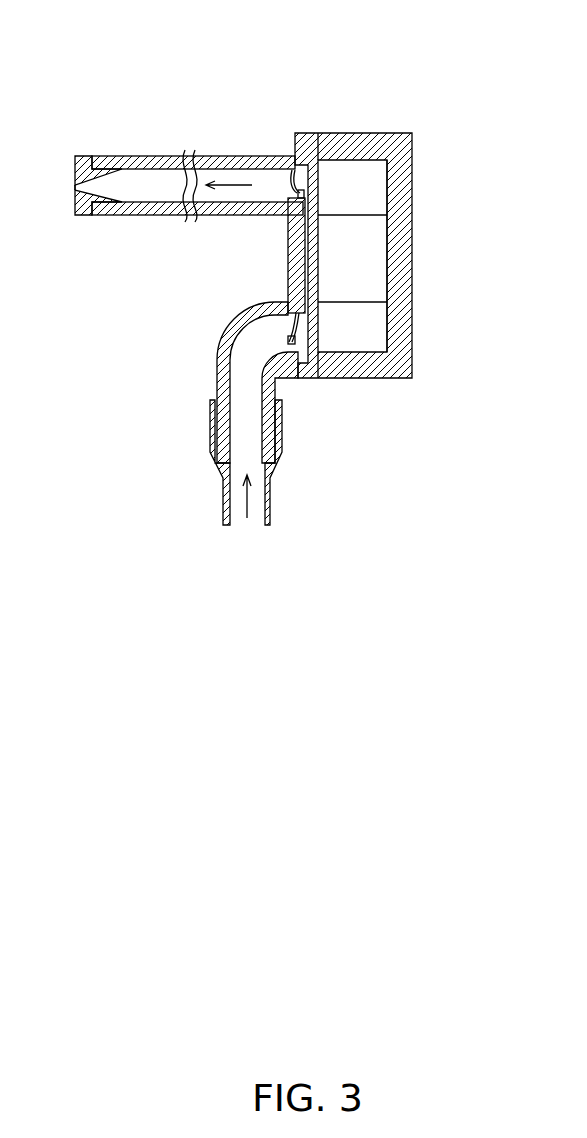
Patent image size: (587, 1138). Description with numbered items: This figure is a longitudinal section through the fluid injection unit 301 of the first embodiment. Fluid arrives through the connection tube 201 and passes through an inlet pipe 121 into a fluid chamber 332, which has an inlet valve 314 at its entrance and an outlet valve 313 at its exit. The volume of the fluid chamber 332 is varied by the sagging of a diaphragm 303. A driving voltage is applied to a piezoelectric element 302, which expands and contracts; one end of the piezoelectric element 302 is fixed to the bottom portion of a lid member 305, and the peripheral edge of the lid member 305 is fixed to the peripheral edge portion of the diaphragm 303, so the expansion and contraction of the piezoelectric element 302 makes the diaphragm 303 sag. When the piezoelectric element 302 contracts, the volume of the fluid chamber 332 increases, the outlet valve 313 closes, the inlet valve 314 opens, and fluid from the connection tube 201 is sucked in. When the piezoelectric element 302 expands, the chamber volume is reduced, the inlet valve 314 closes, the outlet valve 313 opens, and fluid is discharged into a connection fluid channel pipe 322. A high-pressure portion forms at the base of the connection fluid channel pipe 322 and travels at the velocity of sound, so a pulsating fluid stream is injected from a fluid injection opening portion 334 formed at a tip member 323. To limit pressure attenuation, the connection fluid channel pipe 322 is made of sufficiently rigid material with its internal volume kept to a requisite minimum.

The connector assembly 301 is at (277, 33).
The piezoelectric element 302 is at (355, 275).
The diaphragm 303 is at (323, 378).
The lid member 305 is at (413, 198).
The outlet valve 313 is at (161, 200).
The inlet valve 314 is at (209, 366).
The connection fluid channel pipe 322 is at (143, 217).
The tip member 323 is at (78, 217).
The fluid chamber 332 is at (308, 200).
The fluid injection opening portion 334 is at (75, 187).
The inlet pipe 121 is at (235, 345).
The connection tube 201 is at (225, 492).